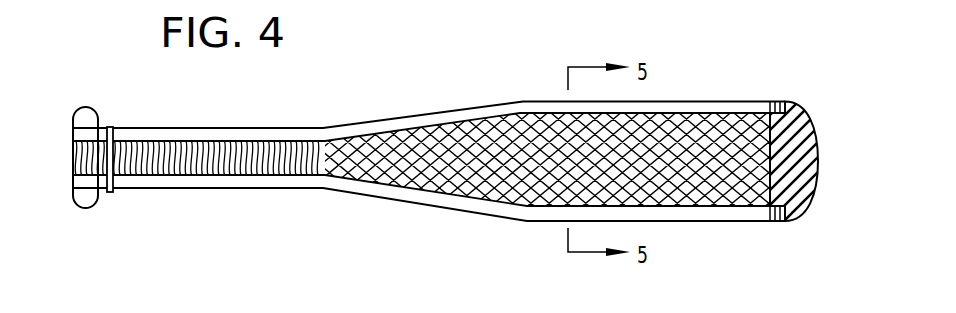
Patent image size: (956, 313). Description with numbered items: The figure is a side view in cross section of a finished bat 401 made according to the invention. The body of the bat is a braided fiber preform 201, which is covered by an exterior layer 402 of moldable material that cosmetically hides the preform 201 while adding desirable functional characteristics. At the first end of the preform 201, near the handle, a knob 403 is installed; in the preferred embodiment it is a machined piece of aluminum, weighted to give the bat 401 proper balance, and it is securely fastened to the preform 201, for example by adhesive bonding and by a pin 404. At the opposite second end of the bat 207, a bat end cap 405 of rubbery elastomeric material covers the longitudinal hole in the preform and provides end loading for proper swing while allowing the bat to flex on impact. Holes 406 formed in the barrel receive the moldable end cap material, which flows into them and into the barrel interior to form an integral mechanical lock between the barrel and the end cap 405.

The preform 201 is at (188, 146).
The second end of the bat 207 is at (747, 101).
The bat 401 is at (384, 215).
The exterior layer 402 is at (462, 208).
The knob 403 is at (85, 113).
The pin 404 is at (112, 193).
The bat end cap 405 is at (798, 211).
The holes 406 is at (770, 226).